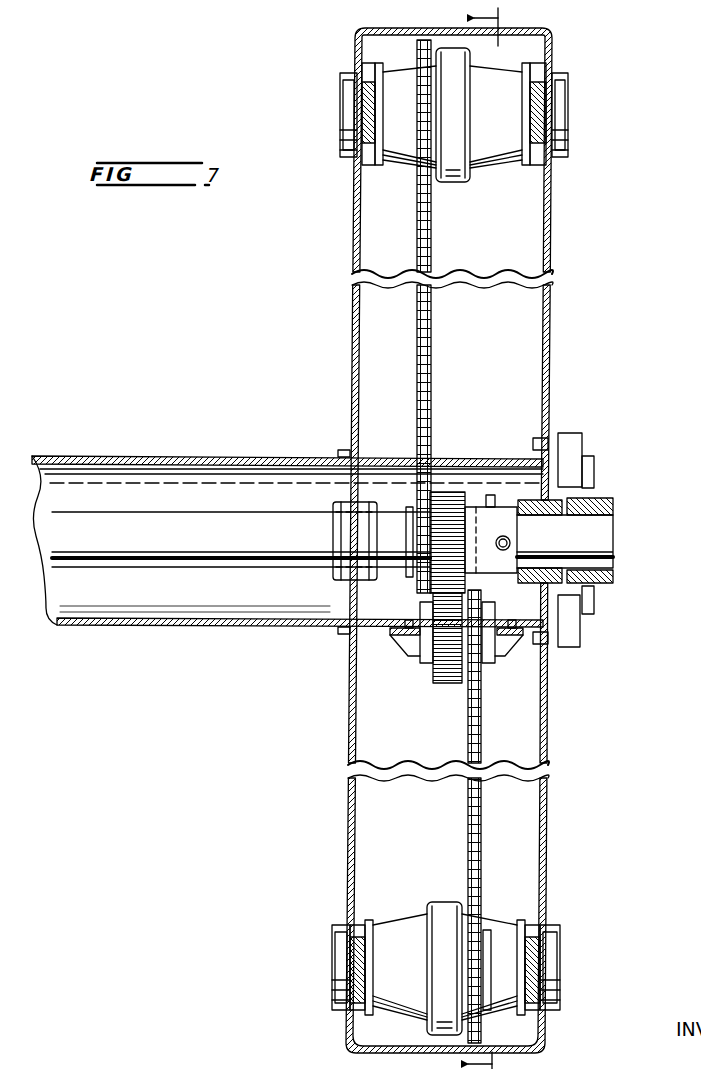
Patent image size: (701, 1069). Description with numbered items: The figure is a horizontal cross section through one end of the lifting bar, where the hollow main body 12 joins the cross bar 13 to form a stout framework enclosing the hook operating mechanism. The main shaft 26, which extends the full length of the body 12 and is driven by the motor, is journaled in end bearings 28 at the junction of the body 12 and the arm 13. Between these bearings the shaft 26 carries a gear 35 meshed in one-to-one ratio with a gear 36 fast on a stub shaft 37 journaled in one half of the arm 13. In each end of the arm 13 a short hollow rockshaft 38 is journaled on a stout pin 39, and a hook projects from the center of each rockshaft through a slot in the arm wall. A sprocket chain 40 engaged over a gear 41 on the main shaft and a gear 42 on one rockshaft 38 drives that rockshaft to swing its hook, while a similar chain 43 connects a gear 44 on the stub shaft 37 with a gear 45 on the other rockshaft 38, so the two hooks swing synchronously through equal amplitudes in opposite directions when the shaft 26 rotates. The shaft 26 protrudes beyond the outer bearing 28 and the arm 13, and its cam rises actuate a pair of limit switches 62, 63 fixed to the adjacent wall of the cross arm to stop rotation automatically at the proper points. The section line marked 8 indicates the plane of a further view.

The section line 8- 8 is at (492, 536).
The main body 12 is at (165, 463).
The cross bar 13 is at (549, 718).
The main shaft 26 is at (185, 523).
The end bearing 28 is at (333, 538).
The gear 35 is at (448, 492).
The gear 36 is at (441, 684).
The stub shaft 37 is at (410, 651).
The hollow rockshaft 38 is at (470, 166).
The pin 39 is at (568, 131).
The sprocket chain 40 is at (431, 343).
The gear 41 is at (407, 578).
The gear 42 is at (418, 172).
The chain 43 is at (468, 837).
The gear 44 is at (486, 665).
The gear 45 is at (486, 924).
The limit switch 62 is at (577, 636).
The limit switch 63 is at (577, 441).